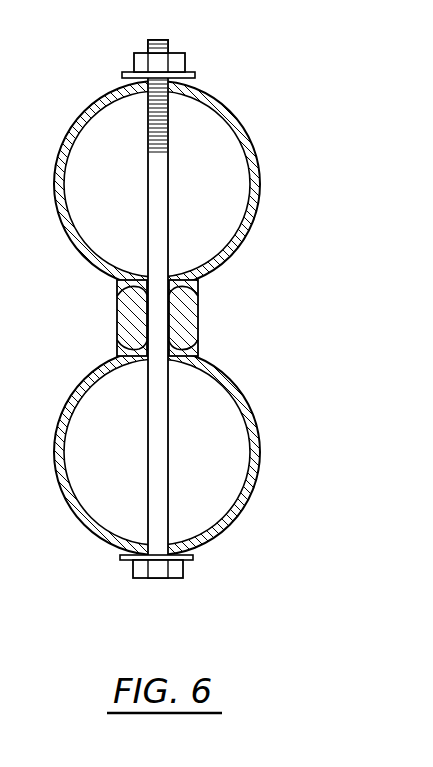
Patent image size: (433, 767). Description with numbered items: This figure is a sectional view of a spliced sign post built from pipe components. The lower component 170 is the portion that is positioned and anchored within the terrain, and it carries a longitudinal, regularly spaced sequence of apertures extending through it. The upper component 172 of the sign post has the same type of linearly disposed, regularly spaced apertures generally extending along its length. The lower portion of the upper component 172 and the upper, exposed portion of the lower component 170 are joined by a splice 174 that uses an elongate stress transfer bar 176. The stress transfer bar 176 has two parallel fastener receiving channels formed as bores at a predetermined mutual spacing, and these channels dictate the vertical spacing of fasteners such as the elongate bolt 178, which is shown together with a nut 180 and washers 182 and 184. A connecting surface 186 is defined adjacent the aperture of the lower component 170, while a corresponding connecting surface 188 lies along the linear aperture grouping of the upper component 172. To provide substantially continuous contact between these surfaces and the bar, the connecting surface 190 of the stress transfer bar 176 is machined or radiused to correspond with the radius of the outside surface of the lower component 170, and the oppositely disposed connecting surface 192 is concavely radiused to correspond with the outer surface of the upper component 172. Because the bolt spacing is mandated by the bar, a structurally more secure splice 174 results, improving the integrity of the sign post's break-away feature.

The lower component 170 is at (238, 122).
The upper component 172 is at (262, 462).
The splice 174 is at (155, 318).
The stress transfer bar 176 is at (200, 320).
The elongate bolt 178 is at (175, 578).
The nut 180 is at (185, 57).
The washer 182 is at (125, 562).
The washer 184 is at (128, 72).
The connecting surface 186 is at (118, 287).
The connecting surface 188 is at (120, 344).
The connecting surface 190 is at (200, 286).
The connecting surface 192 is at (198, 350).